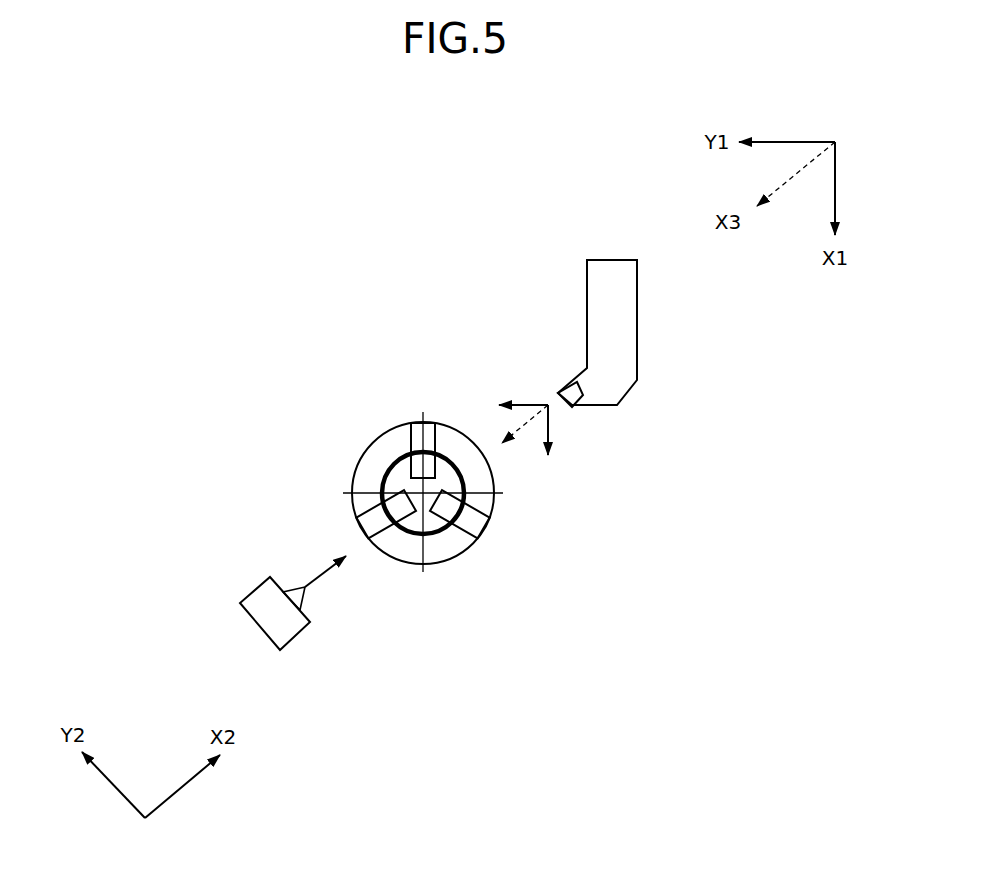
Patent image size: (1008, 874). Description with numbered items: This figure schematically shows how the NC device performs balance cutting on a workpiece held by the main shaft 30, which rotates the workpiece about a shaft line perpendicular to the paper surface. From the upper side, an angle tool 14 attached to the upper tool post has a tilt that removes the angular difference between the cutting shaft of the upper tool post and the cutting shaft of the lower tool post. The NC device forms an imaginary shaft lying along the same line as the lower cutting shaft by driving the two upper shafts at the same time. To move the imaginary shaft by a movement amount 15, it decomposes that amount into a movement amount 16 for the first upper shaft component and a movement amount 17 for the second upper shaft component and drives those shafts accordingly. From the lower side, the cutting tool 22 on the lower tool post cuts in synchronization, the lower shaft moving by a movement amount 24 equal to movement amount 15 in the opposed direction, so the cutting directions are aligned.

The angle tool 14 is at (637, 340).
The movement amount 15 is at (512, 432).
The movement amount 16 is at (552, 433).
The movement amount 17 is at (517, 398).
The cutting tool 22 is at (253, 593).
The movement amount 24 is at (323, 580).
The main shaft 30 is at (493, 508).